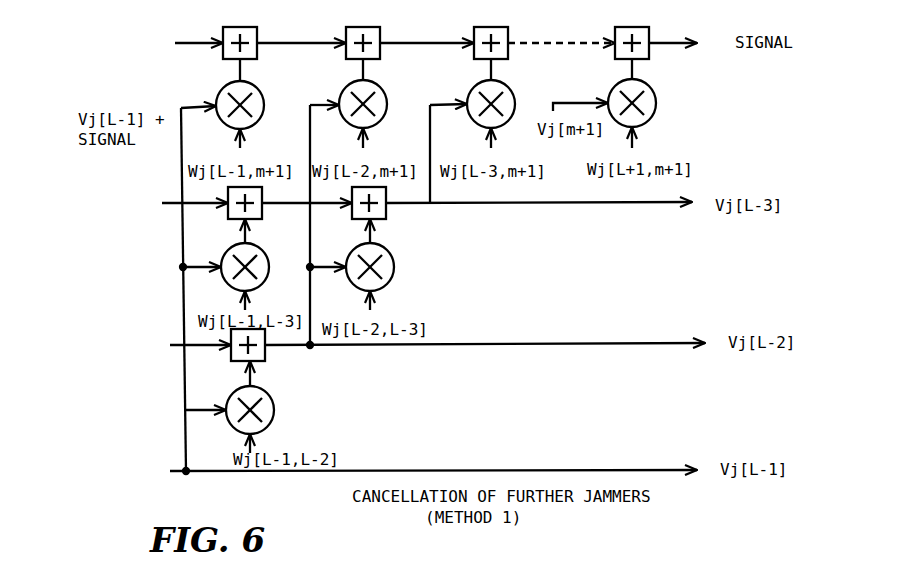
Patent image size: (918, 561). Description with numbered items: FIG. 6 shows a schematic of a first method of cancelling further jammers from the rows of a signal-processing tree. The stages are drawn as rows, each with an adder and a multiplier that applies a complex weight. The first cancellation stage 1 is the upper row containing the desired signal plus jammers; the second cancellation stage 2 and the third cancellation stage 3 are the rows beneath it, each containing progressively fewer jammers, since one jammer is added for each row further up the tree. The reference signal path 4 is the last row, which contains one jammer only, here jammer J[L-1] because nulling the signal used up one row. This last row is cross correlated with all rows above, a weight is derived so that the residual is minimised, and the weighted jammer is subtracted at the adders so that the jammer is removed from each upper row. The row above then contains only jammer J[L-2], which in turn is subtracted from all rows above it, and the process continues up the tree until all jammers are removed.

The first jammer cancellation stage (row with Vb[m+1] input) 1 is at (387, 87).
The second cancellation stage (row with Vb[L-2] input) 2 is at (377, 245).
The third cancellation stage (row with Vb[L-1] input) 3 is at (391, 385).
The reference signal path Vb[L] 4 is at (381, 474).